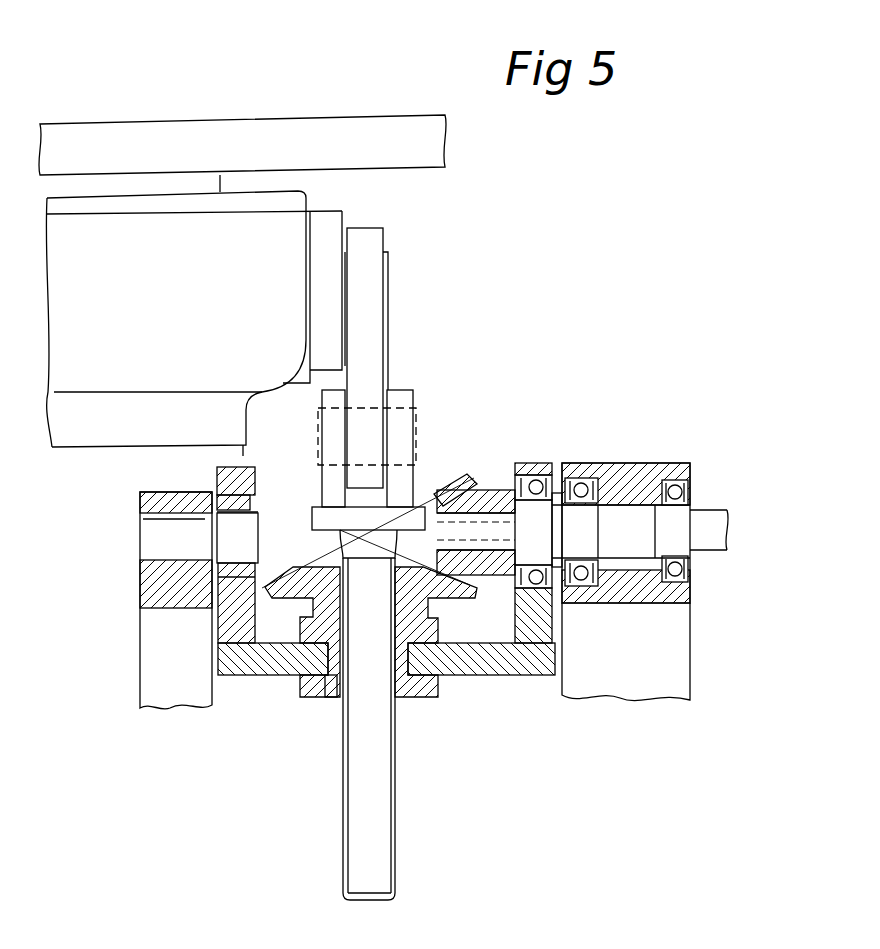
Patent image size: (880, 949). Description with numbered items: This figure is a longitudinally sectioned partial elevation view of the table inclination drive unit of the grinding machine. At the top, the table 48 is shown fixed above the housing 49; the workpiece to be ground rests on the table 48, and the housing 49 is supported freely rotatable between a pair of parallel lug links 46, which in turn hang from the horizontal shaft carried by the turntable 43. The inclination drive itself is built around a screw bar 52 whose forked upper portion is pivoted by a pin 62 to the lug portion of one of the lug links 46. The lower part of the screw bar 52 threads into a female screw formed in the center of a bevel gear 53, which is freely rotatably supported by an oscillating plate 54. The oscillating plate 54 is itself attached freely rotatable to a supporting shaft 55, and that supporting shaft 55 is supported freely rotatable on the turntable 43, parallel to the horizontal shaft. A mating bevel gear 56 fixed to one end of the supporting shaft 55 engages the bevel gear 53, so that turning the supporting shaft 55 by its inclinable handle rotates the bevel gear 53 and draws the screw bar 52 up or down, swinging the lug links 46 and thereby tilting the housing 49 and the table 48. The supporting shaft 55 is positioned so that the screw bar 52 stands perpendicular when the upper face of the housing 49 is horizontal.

The turntable 43 is at (683, 645).
The lug link 46 is at (386, 334).
The table 48 is at (381, 123).
The housing 49 is at (250, 217).
The screw bar 52 is at (388, 788).
The bevel gear 53 is at (293, 598).
The oscillating plate 54 is at (495, 668).
The supporting shaft 55 is at (627, 510).
The bevel gear 56 is at (460, 477).
The pin 62 is at (417, 418).